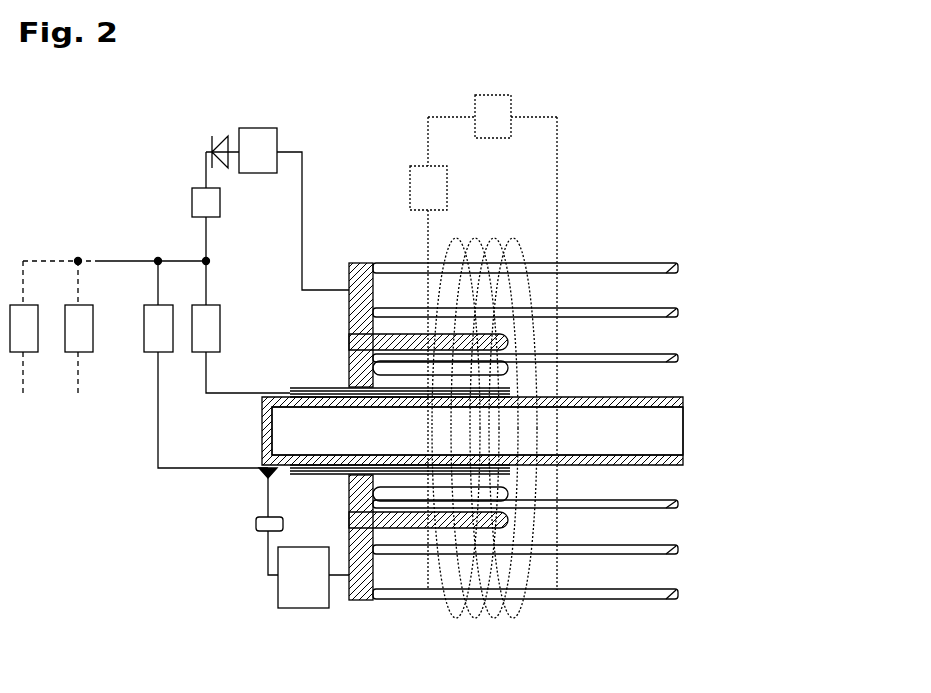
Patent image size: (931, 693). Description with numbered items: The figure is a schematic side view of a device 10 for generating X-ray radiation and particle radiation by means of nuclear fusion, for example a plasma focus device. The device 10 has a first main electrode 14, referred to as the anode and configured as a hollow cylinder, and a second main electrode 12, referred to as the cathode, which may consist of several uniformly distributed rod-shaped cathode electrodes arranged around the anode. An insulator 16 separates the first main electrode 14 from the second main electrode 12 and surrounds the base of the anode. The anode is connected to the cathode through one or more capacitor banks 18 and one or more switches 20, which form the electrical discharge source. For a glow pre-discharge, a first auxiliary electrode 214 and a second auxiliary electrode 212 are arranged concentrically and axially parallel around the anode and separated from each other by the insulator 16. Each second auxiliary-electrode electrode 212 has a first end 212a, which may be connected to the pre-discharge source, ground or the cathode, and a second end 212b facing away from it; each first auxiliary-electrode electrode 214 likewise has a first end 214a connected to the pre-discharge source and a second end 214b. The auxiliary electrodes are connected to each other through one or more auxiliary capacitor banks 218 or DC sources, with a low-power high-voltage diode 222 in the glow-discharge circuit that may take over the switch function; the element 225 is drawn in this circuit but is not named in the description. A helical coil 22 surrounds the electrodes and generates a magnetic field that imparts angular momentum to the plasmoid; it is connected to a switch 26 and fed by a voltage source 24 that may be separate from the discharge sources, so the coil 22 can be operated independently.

The device 10 is at (810, 160).
The second main electrode 12 is at (680, 268).
The first main electrode 14 is at (685, 402).
The insulator 16 is at (325, 387).
The capacitor bank 18 is at (256, 524).
The switch 20 is at (278, 592).
The coil 22 is at (559, 143).
The voltage source 24 is at (492, 95).
The switch 26 is at (410, 181).
The second auxiliary electrode 212 is at (410, 336).
The first end 212a is at (347, 336).
The second end 212b is at (508, 343).
The first auxiliary electrode 214 is at (405, 470).
The first end 214a is at (283, 408).
The second end 214b is at (510, 471).
The auxiliary capacitor bank 218 is at (192, 201).
The diode 222 is at (210, 143).
The voltage source 225 is at (258, 128).